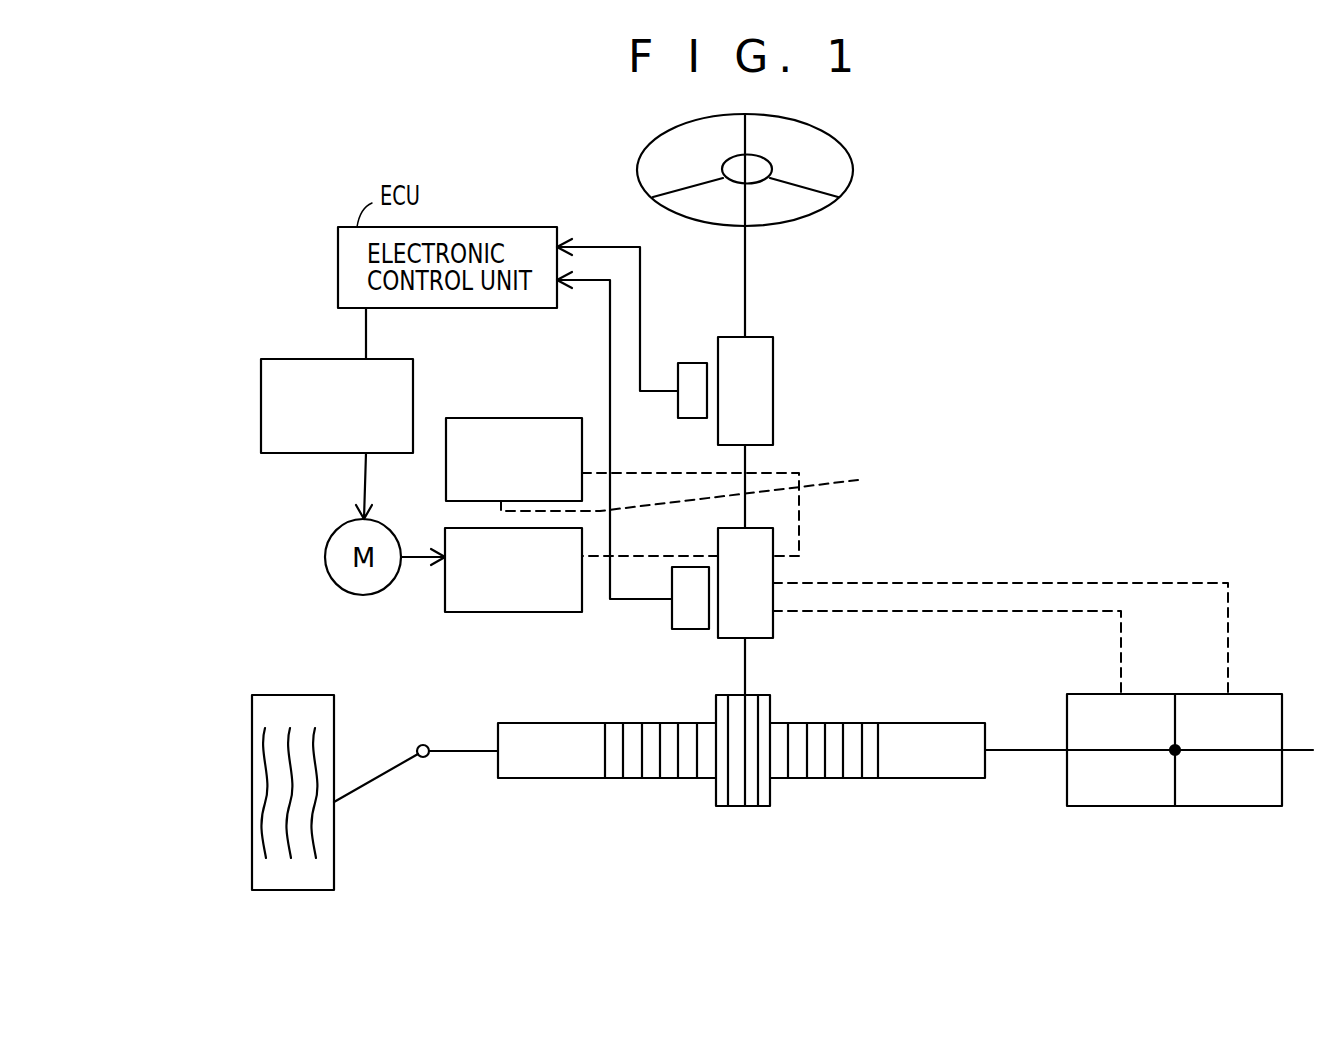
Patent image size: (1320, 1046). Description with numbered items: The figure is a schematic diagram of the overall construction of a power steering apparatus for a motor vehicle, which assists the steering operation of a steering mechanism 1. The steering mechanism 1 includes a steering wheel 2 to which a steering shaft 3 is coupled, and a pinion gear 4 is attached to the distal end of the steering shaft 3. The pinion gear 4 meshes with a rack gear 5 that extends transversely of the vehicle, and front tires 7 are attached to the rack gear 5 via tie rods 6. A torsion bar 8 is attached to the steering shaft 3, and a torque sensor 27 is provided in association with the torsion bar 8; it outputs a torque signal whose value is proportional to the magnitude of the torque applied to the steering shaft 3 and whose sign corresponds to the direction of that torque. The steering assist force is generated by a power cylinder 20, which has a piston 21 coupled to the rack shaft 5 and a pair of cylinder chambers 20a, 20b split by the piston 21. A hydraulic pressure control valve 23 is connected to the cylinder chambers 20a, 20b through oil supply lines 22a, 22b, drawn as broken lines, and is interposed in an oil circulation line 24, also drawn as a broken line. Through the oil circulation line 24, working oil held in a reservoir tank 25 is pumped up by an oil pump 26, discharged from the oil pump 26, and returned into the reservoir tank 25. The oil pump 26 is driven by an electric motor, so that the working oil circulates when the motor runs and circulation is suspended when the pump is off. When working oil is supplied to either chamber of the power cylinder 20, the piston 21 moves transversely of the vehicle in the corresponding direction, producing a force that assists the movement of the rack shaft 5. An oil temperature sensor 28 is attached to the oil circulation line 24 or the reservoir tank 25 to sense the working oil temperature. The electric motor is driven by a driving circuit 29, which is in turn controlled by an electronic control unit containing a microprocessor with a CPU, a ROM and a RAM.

The steering mechanism 1 is at (750, 523).
The steering wheel 2 is at (853, 140).
The steering shaft 3 is at (740, 260).
The pinion gear 4 is at (735, 806).
The rack gear 5 is at (852, 778).
The tie rods 6 is at (458, 752).
The front tires 7 is at (251, 845).
The torsion bar 8 is at (773, 394).
The power cylinder 20 is at (1151, 813).
The cylinder chamber 20a is at (1133, 790).
The cylinder chamber 20b is at (1253, 790).
The piston 21 is at (1170, 760).
The oil supply line 22a is at (903, 612).
The oil supply line 22b is at (963, 583).
The hydraulic pressure control valve 23 is at (773, 628).
The oil circulation line 24 is at (799, 518).
The reservoir tank 25 is at (487, 418).
The oil pump 26 is at (493, 612).
The torque sensor 27 is at (700, 390).
The oil temperature sensor 28 is at (672, 618).
The driving circuit 29 is at (288, 359).